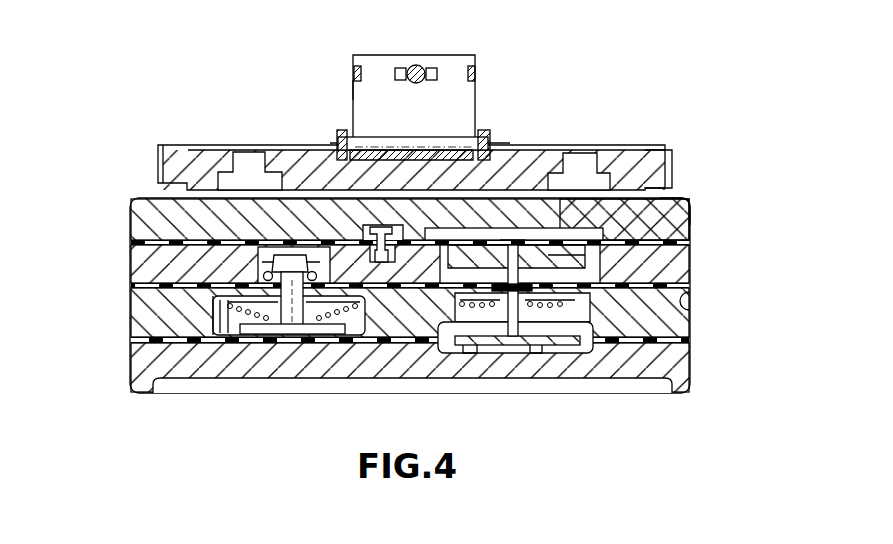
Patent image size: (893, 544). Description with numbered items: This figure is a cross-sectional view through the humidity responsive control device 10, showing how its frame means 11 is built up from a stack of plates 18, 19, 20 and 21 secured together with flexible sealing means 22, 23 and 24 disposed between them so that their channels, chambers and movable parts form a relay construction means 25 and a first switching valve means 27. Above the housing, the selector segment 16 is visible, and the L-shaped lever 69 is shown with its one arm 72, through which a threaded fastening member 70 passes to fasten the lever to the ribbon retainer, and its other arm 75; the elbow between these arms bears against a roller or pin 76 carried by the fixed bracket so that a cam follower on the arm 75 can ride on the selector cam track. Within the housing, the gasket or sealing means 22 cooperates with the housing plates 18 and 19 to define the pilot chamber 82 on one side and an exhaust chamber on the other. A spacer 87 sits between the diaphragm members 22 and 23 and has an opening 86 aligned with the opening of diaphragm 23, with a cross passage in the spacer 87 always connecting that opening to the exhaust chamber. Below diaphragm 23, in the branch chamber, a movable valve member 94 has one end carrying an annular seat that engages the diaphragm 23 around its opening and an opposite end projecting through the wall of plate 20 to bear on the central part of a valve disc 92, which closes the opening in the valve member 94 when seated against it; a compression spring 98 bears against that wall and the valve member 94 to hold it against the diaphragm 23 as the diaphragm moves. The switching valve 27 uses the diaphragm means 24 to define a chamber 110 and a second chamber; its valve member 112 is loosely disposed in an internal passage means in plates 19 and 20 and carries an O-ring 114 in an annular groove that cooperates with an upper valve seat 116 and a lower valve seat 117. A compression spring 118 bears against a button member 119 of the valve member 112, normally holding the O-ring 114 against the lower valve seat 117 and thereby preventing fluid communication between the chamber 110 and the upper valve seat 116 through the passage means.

The humidity responsive control device 10 is at (680, 48).
The frame means 11 is at (684, 212).
The selector segment 16 is at (157, 163).
The plate 18 is at (684, 228).
The plate 19 is at (676, 265).
The plate 20 is at (686, 320).
The plate 21 is at (627, 377).
The flexible sealing means 22 is at (677, 200).
The flexible sealing means 23 is at (688, 303).
The flexible sealing means 24 is at (660, 340).
The relay construction means 25 is at (672, 186).
The first switching valve means 27 is at (243, 272).
The L-shaped lever 69 is at (462, 98).
The threaded fastening member 70 is at (418, 66).
The arm 72 is at (377, 66).
The arm 75 is at (386, 150).
The roller or pin 76 is at (455, 136).
The pilot chamber 82 is at (522, 240).
The opening 86 is at (520, 283).
The spacer 87 is at (484, 256).
The valve disc 92 is at (532, 345).
The movable valve member 94 is at (582, 318).
The compression spring 98 is at (457, 305).
The chamber 110 is at (222, 335).
The valve member 112 is at (283, 325).
The O-ring 114 is at (372, 245).
The upper valve seat 116 is at (265, 262).
The lower valve seat 117 is at (272, 282).
The compression spring 118 is at (240, 308).
The button member 119 is at (315, 335).